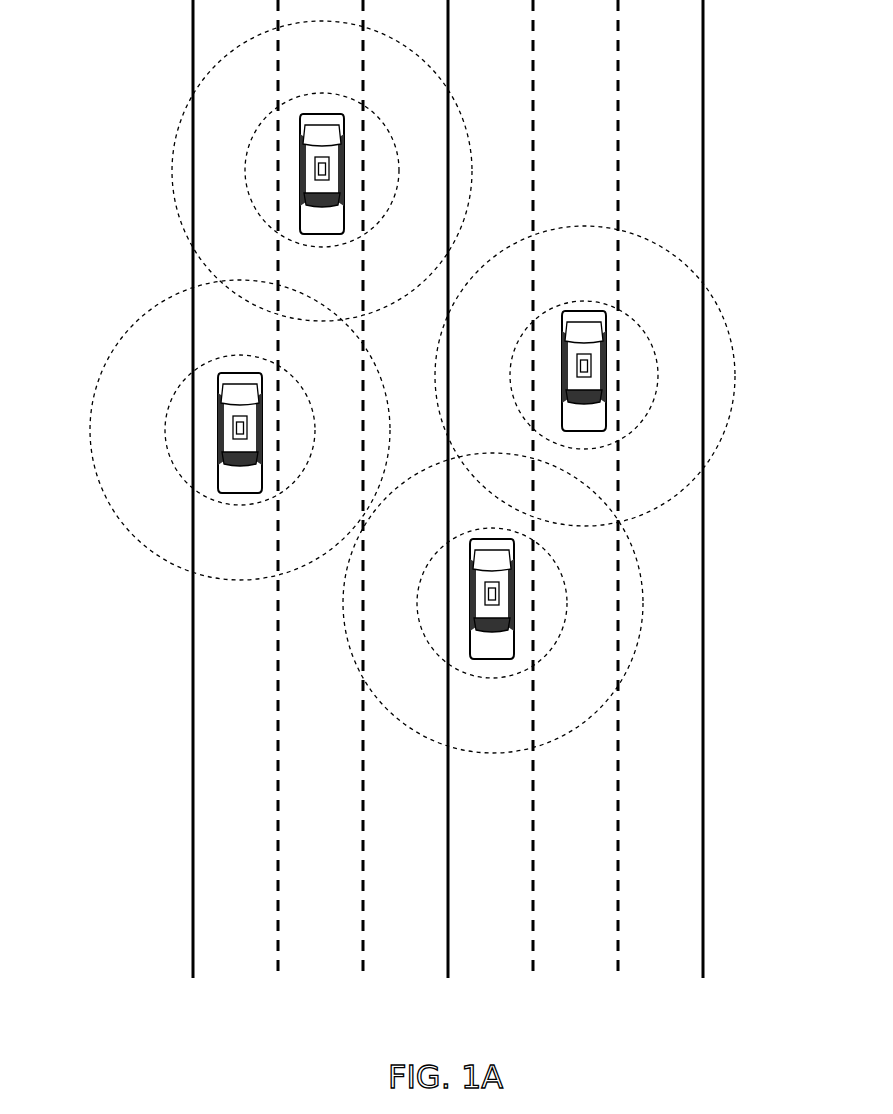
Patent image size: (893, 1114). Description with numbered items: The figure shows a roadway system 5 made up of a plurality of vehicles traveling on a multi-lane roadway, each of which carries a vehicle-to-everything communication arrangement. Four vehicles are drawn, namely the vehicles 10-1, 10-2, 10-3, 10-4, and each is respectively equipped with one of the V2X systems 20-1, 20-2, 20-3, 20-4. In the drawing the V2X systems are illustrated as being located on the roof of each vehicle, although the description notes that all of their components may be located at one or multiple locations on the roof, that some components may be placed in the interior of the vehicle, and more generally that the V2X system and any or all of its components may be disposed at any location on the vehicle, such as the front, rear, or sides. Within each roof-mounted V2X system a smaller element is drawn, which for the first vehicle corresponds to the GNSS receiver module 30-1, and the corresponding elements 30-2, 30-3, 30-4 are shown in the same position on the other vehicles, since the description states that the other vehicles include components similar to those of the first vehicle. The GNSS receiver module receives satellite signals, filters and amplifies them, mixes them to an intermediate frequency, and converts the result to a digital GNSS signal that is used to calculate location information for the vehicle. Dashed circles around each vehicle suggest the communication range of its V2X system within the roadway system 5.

The roadway system 5 is at (760, 86).
The vehicle 10-1 is at (358, 159).
The V2X system 20-1 is at (343, 148).
The GNSS receiver module 30-1 is at (342, 164).
The vehicle 10-2 is at (280, 419).
The V2X system 20-2 is at (263, 408).
The second vehicle communication device 30-2 is at (262, 425).
The vehicle 10-3 is at (620, 359).
The V2X system 20-3 is at (606, 352).
The third vehicle communication device 30-3 is at (607, 368).
The vehicle 10-4 is at (533, 593).
The V2X system 20-4 is at (513, 582).
The fourth vehicle communication device 30-4 is at (513, 598).